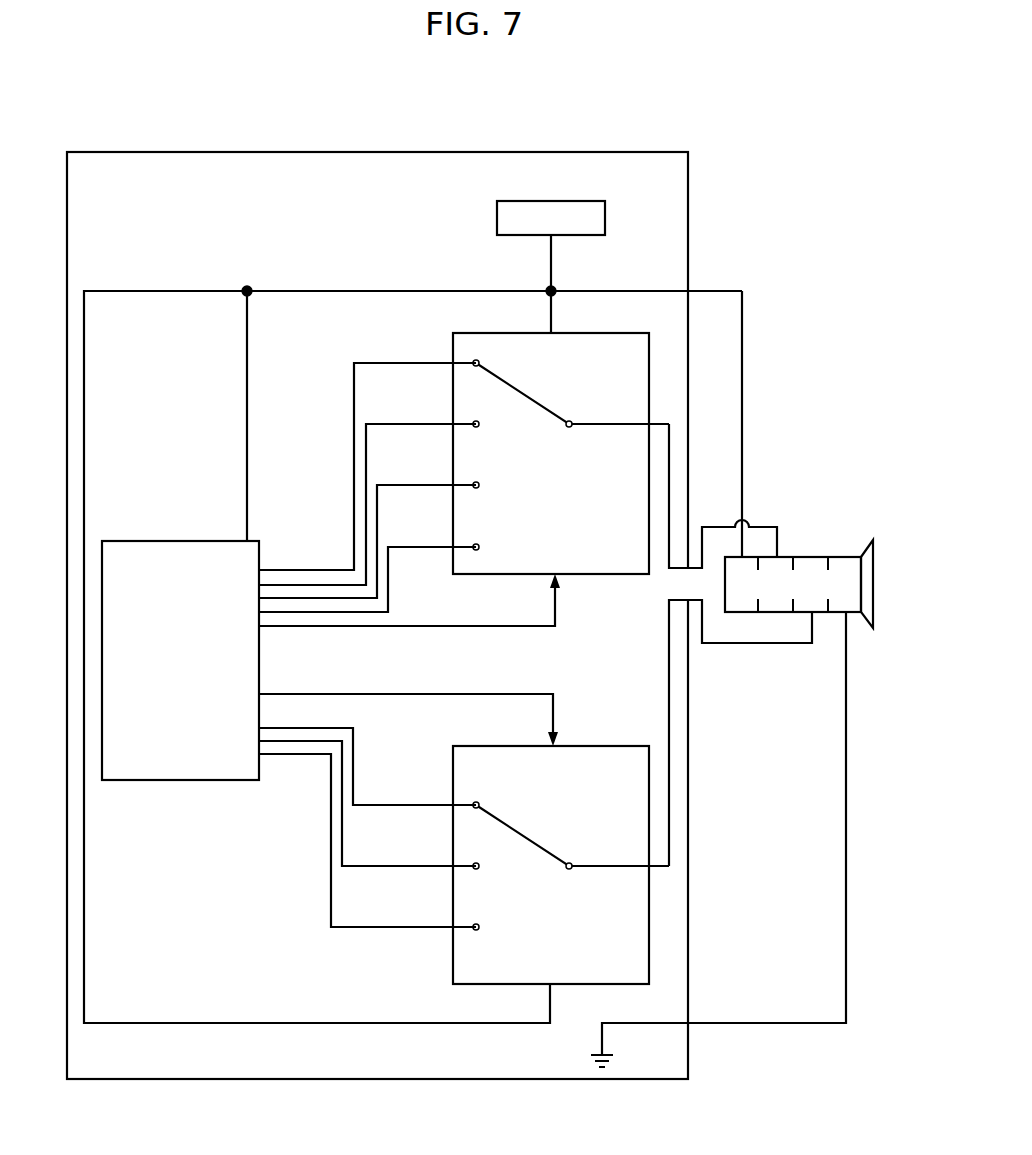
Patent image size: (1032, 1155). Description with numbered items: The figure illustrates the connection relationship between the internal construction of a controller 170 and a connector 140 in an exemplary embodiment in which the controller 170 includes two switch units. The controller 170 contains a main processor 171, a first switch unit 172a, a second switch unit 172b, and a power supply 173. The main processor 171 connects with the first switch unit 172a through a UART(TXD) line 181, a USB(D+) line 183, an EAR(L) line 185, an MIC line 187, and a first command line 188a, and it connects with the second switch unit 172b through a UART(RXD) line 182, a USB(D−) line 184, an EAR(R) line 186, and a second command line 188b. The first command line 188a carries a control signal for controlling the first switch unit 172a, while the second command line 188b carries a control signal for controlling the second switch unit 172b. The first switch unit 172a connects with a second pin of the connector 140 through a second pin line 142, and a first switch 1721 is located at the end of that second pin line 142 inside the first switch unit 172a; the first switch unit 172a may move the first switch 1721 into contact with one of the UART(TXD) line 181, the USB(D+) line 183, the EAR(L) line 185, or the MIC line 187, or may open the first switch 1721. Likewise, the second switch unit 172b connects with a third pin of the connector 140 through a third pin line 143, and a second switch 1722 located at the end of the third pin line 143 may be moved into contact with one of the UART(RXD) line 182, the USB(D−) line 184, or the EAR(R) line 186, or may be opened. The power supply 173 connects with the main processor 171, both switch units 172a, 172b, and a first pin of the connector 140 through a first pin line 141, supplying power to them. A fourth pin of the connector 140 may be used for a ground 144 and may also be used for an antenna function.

The controller 170 is at (388, 152).
The main processor 171 is at (182, 542).
The power supply 173 is at (553, 202).
The first switch unit 172a is at (558, 337).
The first switch 1721 is at (538, 404).
The second switch unit 172b is at (575, 746).
The second switch 1722 is at (532, 842).
The UART(TXD) line 181 is at (354, 363).
The USB(D+) line 183 is at (366, 424).
The EAR(L) line 185 is at (377, 485).
The MIC line 187 is at (388, 547).
The UART(RXD) line 182 is at (353, 805).
The USB(D−) line 184 is at (342, 866).
The EAR(R) line 186 is at (331, 927).
The CMD 1 line 188a is at (498, 627).
The CMD 2 line 188b is at (530, 694).
The connector 140 is at (808, 557).
The first pin line 141 is at (720, 291).
The second pin line 142 is at (763, 527).
The third pin line 143 is at (751, 643).
The ground (GND) 144 is at (769, 1023).